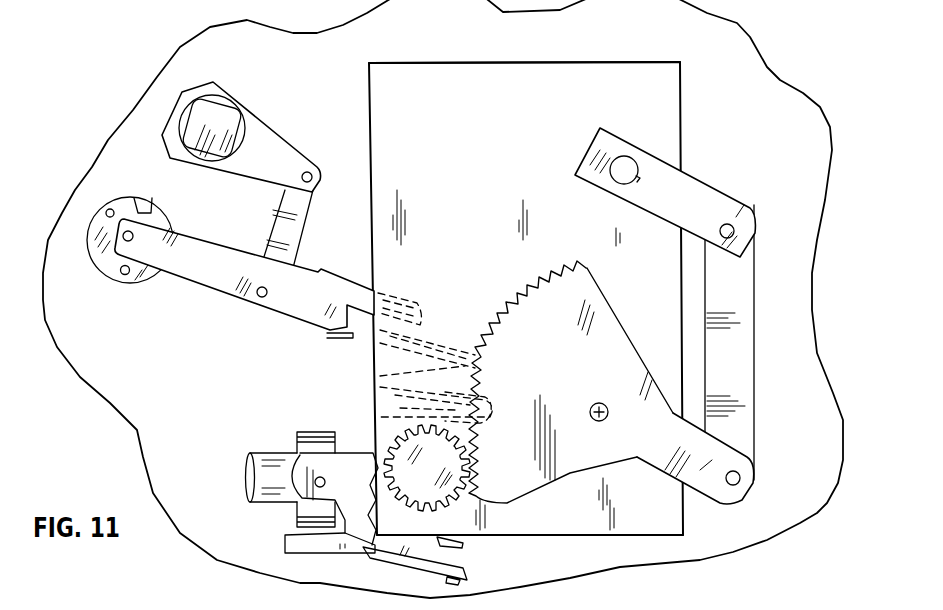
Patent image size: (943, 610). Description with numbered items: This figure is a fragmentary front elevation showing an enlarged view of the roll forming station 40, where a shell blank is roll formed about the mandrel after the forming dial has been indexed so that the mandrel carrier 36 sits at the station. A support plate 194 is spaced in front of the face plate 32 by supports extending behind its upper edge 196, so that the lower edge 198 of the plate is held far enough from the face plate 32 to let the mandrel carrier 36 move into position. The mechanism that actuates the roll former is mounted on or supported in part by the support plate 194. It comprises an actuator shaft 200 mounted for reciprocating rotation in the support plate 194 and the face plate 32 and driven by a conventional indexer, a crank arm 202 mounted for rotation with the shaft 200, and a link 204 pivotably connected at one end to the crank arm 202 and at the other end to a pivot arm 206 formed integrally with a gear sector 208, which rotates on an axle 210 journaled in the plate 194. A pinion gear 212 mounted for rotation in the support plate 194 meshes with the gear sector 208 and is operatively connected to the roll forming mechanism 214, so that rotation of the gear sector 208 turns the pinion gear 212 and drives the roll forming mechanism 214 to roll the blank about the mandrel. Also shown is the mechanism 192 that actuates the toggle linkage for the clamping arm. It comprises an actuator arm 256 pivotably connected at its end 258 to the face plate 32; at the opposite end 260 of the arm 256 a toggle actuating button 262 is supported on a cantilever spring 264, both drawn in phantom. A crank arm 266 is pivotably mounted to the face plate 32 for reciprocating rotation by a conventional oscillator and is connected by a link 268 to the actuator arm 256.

The face plate 32 is at (753, 77).
The mandrel carrier 36 is at (443, 547).
The roll forming station 40 is at (763, 293).
The mechanism 192 is at (140, 157).
The support plate 194 is at (453, 83).
The upper edge 196 is at (563, 62).
The lower edge 198 is at (563, 537).
The actuator shaft 200 is at (624, 163).
The crank arm 202 is at (690, 182).
The link 204 is at (738, 382).
The pivot arm 206 is at (695, 470).
The gear sector 208 is at (556, 347).
The axle 210 is at (608, 414).
The pinion gear 212 is at (490, 500).
The roll forming mechanism 214 is at (281, 519).
The actuator arm 256 is at (205, 277).
The end 258 is at (117, 280).
The opposite end 260 is at (415, 297).
The toggle actuating button 262 is at (378, 378).
The cantilever spring 264 is at (373, 351).
The crank arm 266 is at (263, 138).
The link 268 is at (297, 227).